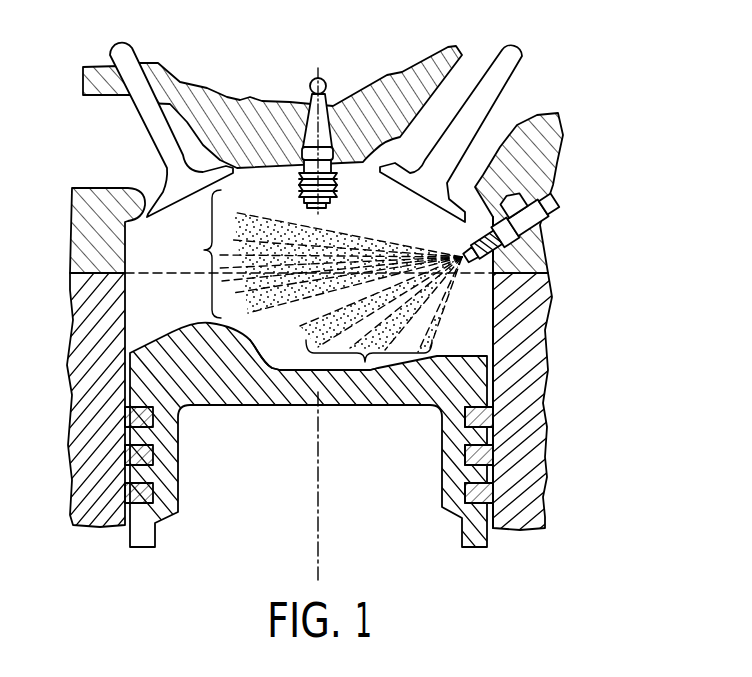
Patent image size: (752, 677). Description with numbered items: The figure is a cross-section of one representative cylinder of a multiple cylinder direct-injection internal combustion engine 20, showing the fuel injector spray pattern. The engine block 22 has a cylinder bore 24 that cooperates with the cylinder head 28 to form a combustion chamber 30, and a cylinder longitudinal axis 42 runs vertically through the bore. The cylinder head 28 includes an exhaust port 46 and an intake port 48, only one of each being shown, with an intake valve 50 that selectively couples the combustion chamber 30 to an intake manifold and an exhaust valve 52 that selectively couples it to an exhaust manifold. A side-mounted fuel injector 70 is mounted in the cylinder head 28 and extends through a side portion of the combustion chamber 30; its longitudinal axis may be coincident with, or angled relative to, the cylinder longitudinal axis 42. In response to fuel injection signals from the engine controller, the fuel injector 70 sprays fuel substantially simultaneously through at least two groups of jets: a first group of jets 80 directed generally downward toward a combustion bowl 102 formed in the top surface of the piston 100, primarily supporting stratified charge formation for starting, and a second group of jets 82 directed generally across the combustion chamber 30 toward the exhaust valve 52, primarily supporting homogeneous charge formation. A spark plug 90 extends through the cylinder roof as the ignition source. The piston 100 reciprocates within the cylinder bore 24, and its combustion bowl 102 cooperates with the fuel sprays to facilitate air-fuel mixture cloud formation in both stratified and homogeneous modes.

The engine 20 is at (578, 132).
The engine block 22 is at (525, 382).
The cylinder bore 24 is at (484, 323).
The cylinder head 28 is at (100, 219).
The combustion chamber 30 is at (473, 306).
The cylinder longitudinal axis 42 is at (321, 491).
The exhaust port 46 is at (124, 168).
The intake port 48 is at (528, 115).
The intake valve 50 is at (511, 52).
The exhaust valve 52 is at (125, 50).
The fuel injector 70 is at (550, 213).
The first group of jets 80 is at (381, 325).
The second group of jets 82 is at (320, 254).
The spark plug 90 is at (310, 92).
The piston 100 is at (228, 398).
The combustion bowl 102 is at (262, 332).